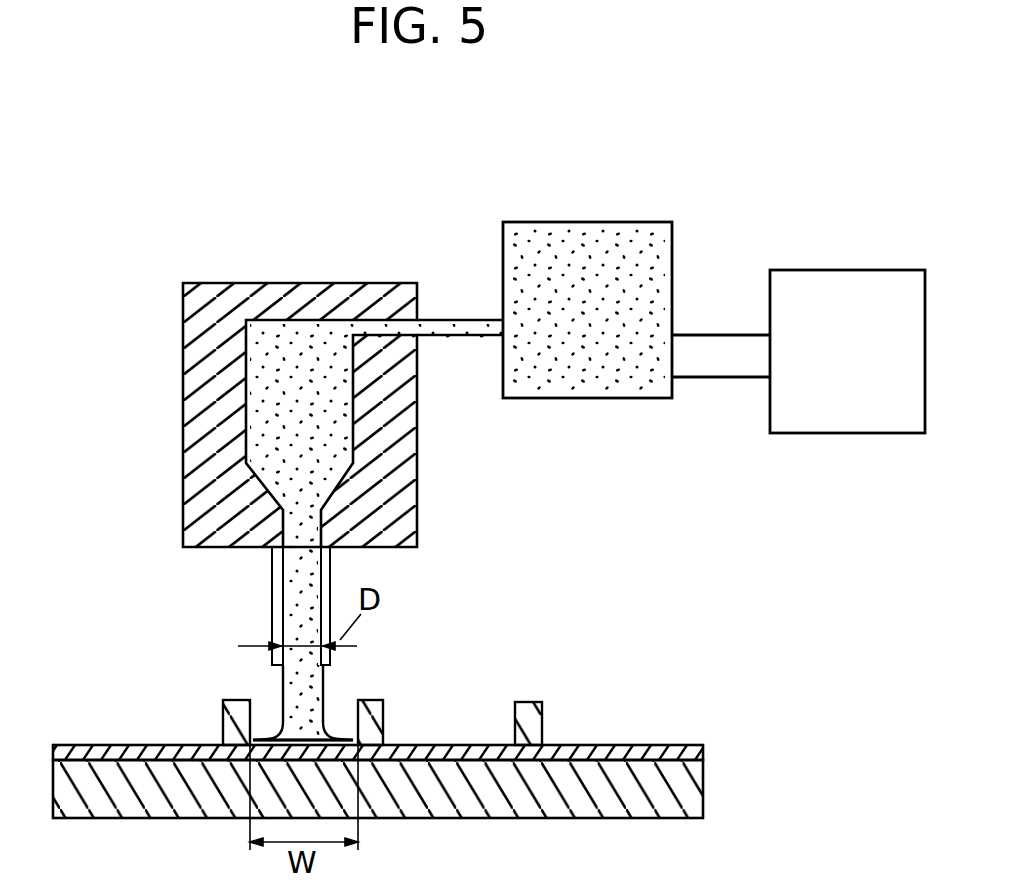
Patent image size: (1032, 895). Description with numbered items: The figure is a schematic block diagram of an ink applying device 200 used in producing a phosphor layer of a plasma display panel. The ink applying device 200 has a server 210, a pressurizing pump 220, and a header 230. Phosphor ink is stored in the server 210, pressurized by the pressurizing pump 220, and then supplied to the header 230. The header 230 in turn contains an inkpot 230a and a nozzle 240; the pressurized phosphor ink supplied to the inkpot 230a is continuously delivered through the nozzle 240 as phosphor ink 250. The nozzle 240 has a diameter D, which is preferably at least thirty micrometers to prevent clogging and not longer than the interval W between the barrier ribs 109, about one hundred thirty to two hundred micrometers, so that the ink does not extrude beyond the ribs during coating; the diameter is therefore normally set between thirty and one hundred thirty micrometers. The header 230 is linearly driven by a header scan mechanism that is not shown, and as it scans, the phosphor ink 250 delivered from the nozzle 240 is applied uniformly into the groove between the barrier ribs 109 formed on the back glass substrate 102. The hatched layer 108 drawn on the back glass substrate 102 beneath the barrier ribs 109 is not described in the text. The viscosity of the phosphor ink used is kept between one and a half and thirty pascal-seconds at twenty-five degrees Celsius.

The ink applying device 200 is at (418, 257).
The header 230 is at (417, 520).
The inkpot 230a is at (257, 402).
The pressurizing pump 220 is at (597, 400).
The server 210 is at (850, 433).
The nozzle 240 is at (273, 615).
The phosphor ink 250 is at (325, 703).
The barrier ribs 109 is at (227, 706).
The thin film layer 108 is at (703, 757).
The back glass substrate 102 is at (703, 783).